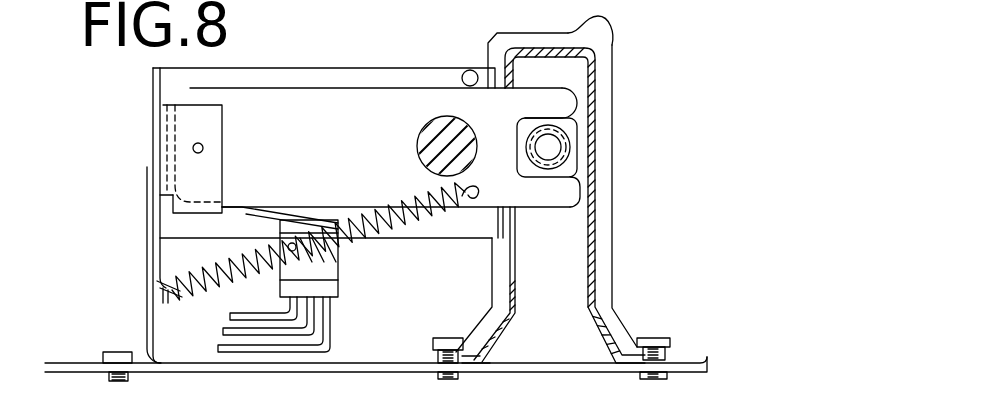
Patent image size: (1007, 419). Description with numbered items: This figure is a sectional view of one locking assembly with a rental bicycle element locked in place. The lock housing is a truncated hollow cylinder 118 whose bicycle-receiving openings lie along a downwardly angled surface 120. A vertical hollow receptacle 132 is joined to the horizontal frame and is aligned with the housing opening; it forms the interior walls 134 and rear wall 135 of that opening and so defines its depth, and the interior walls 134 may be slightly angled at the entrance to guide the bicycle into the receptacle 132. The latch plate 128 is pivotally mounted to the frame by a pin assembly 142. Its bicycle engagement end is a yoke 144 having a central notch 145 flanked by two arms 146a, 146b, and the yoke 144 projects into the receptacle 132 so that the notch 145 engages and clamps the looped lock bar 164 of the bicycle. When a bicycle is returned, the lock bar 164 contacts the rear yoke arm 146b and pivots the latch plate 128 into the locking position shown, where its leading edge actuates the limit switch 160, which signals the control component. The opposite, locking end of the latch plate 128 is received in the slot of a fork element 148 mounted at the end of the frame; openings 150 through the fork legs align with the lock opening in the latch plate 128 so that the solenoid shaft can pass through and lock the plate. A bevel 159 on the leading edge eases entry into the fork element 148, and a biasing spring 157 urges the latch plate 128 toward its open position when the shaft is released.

The truncated hollow cylinder 118 is at (94, 378).
The downwardly angled surface 120 is at (294, 375).
The latch plate 128 is at (283, 141).
The receptacle 132 is at (598, 268).
The interior walls 134 is at (590, 228).
The rear wall 135 is at (617, 34).
The pin assembly 142 is at (418, 141).
The yoke 144 is at (485, 108).
The central notch 145 is at (573, 167).
The yoke arm 146a is at (568, 195).
The rear yoke arm 146b is at (571, 103).
The fork element 148 is at (192, 125).
The openings 150 is at (193, 148).
The biasing spring 157 is at (392, 216).
The bevel 159 is at (230, 203).
The limit switch 160 is at (268, 215).
The lock bar 164 is at (565, 150).